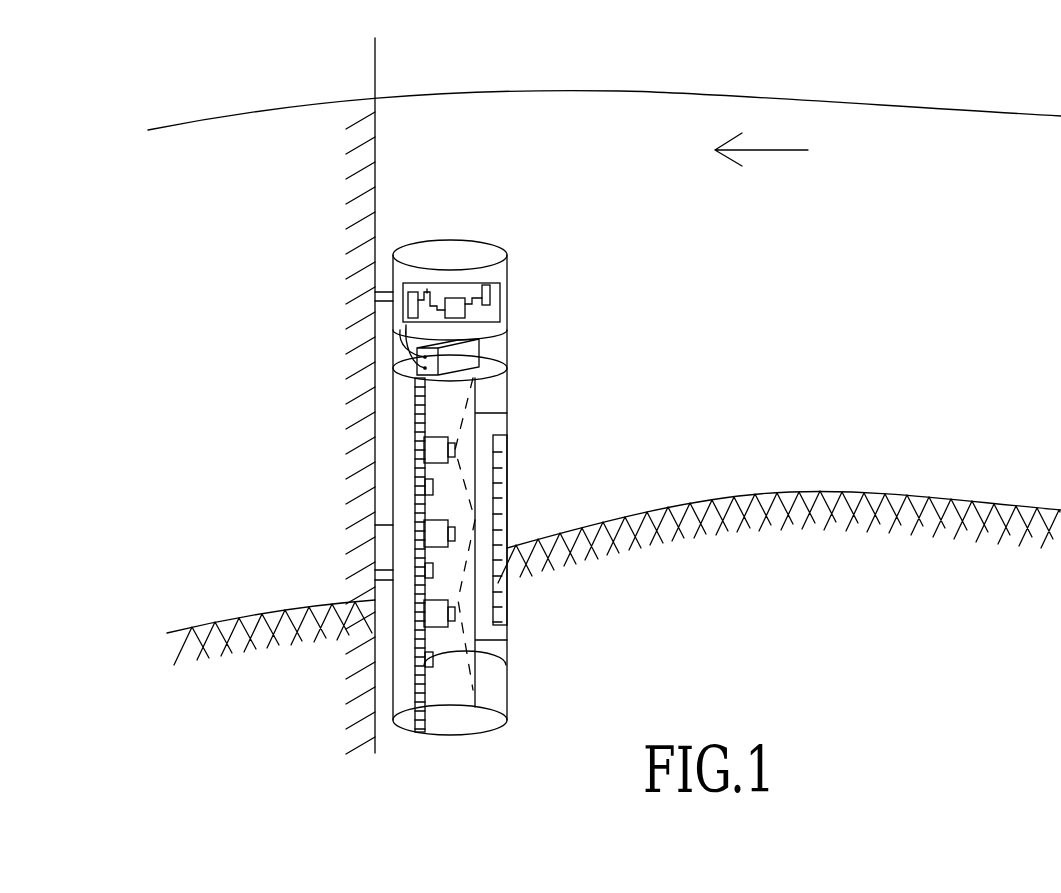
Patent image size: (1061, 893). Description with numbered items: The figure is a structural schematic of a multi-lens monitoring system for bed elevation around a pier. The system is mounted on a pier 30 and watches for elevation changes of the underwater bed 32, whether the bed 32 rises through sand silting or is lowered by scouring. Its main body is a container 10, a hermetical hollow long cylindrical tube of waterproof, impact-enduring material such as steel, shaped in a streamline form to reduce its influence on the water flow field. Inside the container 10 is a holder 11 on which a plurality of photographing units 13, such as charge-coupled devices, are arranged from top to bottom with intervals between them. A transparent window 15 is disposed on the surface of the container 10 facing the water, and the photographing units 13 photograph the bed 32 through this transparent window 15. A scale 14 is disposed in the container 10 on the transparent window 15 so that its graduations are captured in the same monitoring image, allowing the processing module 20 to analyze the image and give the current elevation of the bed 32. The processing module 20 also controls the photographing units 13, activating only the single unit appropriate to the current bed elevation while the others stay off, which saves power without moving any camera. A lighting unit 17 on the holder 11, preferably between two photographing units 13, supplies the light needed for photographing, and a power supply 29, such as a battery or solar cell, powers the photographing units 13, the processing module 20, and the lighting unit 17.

The container 10 is at (456, 247).
The holder 11 is at (415, 418).
The photographing units 13 is at (434, 452).
The scale 14 is at (503, 480).
The transparent window 15 is at (507, 412).
The lighting unit 17 is at (433, 485).
The processing module 20 is at (507, 292).
The power supply 29 is at (486, 350).
The pier 30 is at (375, 77).
The bed 32 is at (787, 492).